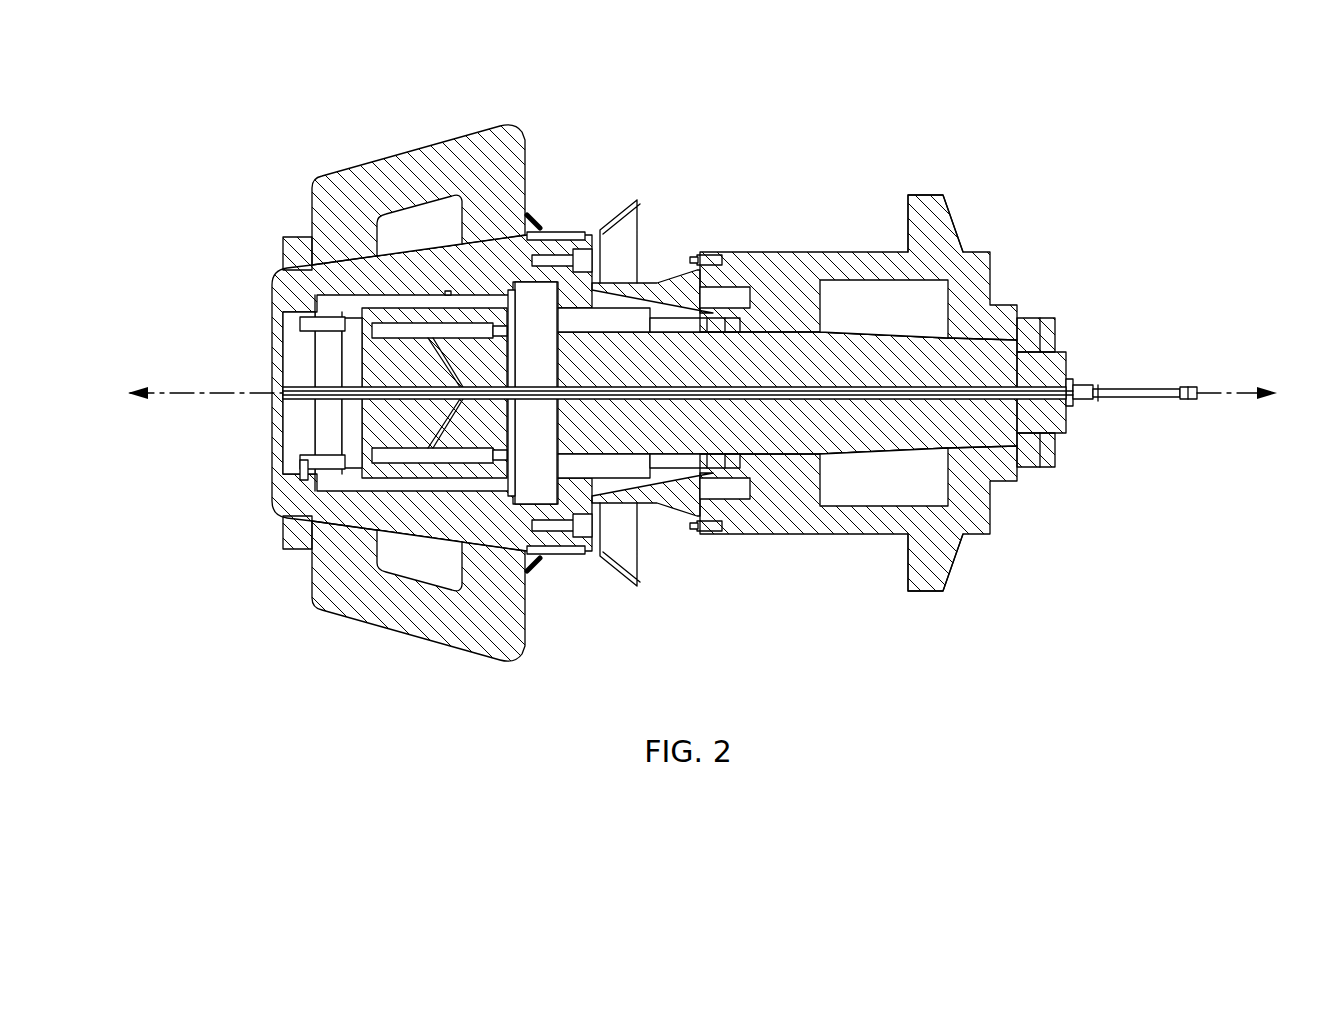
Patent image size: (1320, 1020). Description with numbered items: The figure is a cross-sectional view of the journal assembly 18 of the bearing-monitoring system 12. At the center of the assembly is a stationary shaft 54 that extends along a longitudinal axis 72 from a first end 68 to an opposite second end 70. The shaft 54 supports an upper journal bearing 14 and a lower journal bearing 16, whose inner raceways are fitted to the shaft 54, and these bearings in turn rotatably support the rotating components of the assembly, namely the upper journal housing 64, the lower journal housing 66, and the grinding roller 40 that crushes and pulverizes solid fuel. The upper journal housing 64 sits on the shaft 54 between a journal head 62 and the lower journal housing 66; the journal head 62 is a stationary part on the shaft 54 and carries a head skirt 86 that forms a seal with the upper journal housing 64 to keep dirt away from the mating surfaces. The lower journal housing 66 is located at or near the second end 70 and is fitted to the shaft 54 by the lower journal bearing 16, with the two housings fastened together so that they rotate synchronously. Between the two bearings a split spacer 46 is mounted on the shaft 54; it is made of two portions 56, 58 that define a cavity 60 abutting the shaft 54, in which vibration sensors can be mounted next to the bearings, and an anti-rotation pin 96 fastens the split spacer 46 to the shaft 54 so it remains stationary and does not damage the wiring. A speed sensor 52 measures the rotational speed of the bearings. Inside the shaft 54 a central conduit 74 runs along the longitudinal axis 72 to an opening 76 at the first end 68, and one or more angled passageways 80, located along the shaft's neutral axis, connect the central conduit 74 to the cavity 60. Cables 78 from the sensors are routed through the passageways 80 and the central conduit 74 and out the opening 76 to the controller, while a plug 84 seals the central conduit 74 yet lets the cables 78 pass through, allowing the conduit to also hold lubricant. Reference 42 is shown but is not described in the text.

The system 12 is at (188, 196).
The journal assembly 18 is at (559, 393).
The upper journal bearing 14 is at (537, 330).
The lower journal bearing 16 is at (320, 443).
The grinding roller 40 is at (440, 140).
The housing cavity 42 is at (860, 290).
The split spacer 46 is at (437, 307).
The speed sensor 52 is at (505, 466).
The shaft 54 is at (1060, 370).
The first portion of split spacer 56 is at (457, 315).
The second portion of split spacer 58 is at (385, 315).
The cavity 60 is at (330, 345).
The journal head 62 is at (922, 194).
The upper journal housing 64 is at (577, 290).
The lower journal housing 66 is at (272, 292).
The first end 68 is at (1098, 334).
The second end 70 is at (205, 334).
The longitudinal axis 72 is at (195, 405).
The central conduit 74 is at (930, 380).
The opening 76 is at (1073, 408).
The cables 78 is at (878, 405).
The passageways 80 is at (465, 383).
The plug 84 is at (1092, 400).
The head skirt 86 is at (678, 272).
The anti-rotation pin 96 is at (320, 480).